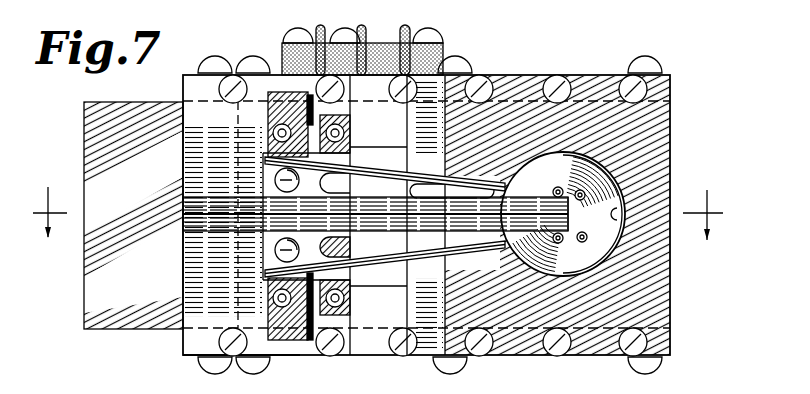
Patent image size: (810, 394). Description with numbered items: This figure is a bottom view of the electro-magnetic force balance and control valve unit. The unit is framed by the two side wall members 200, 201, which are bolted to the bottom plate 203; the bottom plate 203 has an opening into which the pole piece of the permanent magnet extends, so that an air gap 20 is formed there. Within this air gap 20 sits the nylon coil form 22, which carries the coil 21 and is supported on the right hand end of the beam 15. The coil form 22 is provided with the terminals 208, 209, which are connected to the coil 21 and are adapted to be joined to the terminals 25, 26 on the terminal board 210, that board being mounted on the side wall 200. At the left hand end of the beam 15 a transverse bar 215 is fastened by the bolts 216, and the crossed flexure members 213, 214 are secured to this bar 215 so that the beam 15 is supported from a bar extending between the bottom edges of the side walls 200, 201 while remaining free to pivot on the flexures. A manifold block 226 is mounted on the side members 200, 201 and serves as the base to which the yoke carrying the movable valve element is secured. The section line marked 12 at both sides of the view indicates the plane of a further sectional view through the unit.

The section line 12 is at (376, 215).
The beam 15 is at (450, 175).
The air gap 20 is at (587, 164).
The coil 21 is at (613, 192).
The nylon coil form 22 is at (532, 258).
The terminal 25 is at (340, 29).
The terminal 26 is at (380, 33).
The side wall member 200 is at (197, 88).
The side wall member 201 is at (195, 342).
The bottom plate 203 is at (660, 294).
The terminal 208 is at (577, 190).
The terminal 209 is at (578, 242).
The terminal board 210 is at (446, 47).
The crossed flexure member 213 is at (325, 112).
The crossed flexure member 214 is at (310, 100).
The transverse bar 215 is at (281, 93).
The bolt 216 is at (278, 178).
The manifold block 226 is at (94, 255).